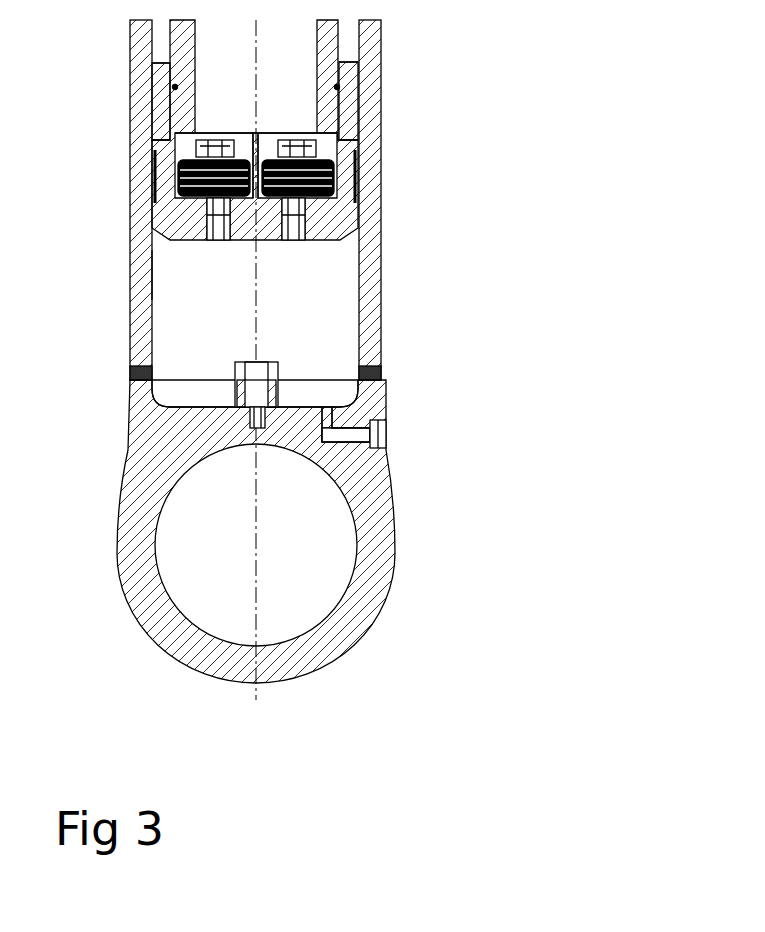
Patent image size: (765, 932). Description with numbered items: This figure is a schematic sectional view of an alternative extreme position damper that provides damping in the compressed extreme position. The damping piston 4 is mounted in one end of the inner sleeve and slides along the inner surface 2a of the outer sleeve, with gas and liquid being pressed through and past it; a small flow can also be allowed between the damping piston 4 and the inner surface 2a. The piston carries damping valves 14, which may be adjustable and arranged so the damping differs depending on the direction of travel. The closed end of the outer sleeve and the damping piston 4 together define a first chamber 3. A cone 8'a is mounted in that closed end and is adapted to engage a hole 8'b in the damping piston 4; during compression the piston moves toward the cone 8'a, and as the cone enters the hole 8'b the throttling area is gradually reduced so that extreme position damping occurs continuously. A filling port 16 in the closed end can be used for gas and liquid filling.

The damping piston 4 is at (157, 217).
The inner surface of the outer sleeve 2a is at (162, 272).
The first chamber 3 is at (232, 303).
The hole 8'b is at (312, 144).
The damping valve 14 is at (325, 152).
The cone 8'a is at (349, 352).
The filling port 16 is at (388, 426).